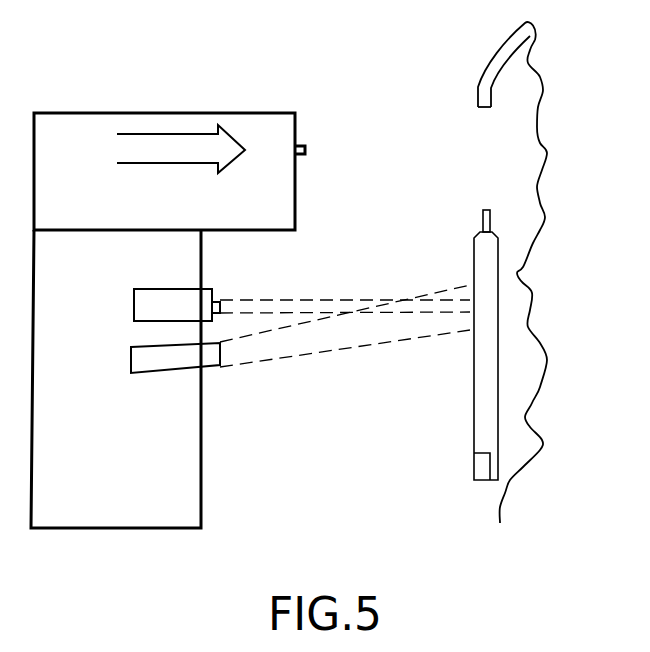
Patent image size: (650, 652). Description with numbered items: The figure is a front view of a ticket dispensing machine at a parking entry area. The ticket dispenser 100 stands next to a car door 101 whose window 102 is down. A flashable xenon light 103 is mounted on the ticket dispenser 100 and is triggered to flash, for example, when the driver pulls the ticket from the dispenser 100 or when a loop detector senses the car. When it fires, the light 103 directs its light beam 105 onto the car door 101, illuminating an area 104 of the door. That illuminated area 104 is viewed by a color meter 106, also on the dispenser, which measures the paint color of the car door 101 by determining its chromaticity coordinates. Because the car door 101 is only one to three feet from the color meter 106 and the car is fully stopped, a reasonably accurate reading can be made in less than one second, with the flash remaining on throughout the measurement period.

The ticket dispenser 100 is at (188, 486).
The car door 101 is at (483, 417).
The window 102 is at (490, 226).
The flashable xenon light 103 is at (172, 371).
The area 104 is at (470, 297).
The light beam 105 is at (297, 340).
The color meter 106 is at (174, 302).